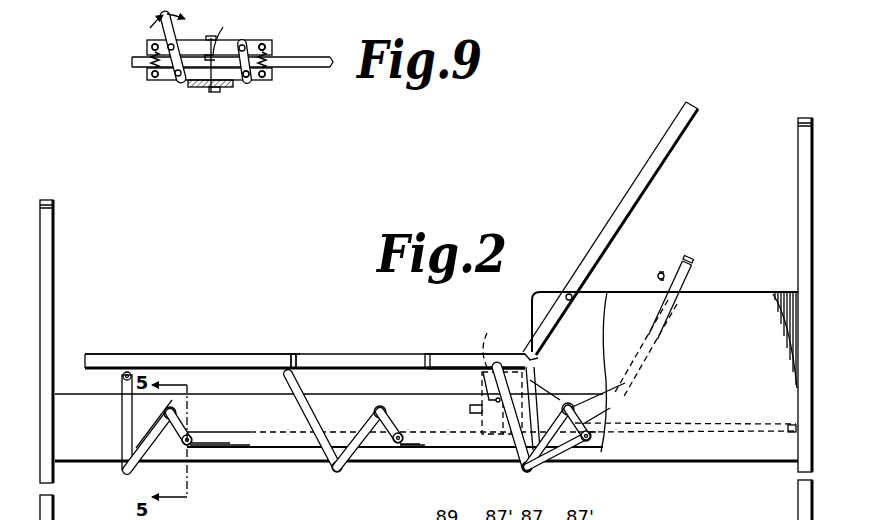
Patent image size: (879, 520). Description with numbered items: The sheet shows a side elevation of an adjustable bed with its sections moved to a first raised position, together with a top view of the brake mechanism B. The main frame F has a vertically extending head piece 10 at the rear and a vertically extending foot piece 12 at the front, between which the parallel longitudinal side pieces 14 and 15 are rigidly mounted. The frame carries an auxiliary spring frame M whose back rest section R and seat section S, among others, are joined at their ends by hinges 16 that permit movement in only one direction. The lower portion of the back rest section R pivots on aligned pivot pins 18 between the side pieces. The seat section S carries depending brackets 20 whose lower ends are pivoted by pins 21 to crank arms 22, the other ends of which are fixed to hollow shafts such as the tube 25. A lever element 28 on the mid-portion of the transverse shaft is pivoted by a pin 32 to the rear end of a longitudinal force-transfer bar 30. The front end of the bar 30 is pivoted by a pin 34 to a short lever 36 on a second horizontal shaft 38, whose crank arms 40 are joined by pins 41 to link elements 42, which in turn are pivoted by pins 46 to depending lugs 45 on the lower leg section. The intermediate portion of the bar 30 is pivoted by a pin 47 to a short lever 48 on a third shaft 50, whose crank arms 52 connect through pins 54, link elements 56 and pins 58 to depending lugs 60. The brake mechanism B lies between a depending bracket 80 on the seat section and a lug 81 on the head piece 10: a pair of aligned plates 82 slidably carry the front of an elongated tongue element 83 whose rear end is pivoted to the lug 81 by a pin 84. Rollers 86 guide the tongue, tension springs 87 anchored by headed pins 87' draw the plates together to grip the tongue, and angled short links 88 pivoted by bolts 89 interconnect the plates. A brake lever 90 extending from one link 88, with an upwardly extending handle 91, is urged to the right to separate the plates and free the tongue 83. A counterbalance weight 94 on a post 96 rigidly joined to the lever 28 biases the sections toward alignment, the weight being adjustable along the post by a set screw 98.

In FIG. 2, the head piece 10 is at (798, 186).
In FIG. 2, the foot piece 12 is at (52, 250).
In FIG. 2, the side piece 14 is at (727, 300).
In FIG. 2, the side piece 15 is at (605, 300).
In FIG. 2, the hinge 16 is at (298, 366).
In FIG. 2, the pivot pin 18 is at (568, 293).
In FIG. 2, the depending bracket 20 is at (510, 458).
In FIG. 2, the pin 21 is at (532, 471).
In FIG. 2, the crank arm 22 is at (562, 455).
In FIG. 2, the hollow shaft 25 is at (627, 384).
In FIG. 2, the lever element 28 is at (612, 408).
In FIG. 2, the force-transfer bar 30 is at (292, 452).
In FIG. 2, the pin 32 is at (592, 438).
In FIG. 2, the pin 34 is at (195, 438).
In FIG. 2, the short lever 36 is at (180, 416).
In FIG. 2, the horizontal shaft 38 is at (187, 408).
In FIG. 2, the crank arm 40 is at (160, 448).
In FIG. 2, the pin 41 is at (124, 474).
In FIG. 2, the link element 42 is at (121, 432).
In FIG. 2, the depending lug 45 is at (122, 376).
In FIG. 2, the pin 46 is at (140, 354).
In FIG. 2, the pin 47 is at (406, 446).
In FIG. 2, the short lever 48 is at (400, 430).
In FIG. 2, the horizontal shaft 50 is at (380, 405).
In FIG. 2, the crank arm 52 is at (366, 428).
In FIG. 2, the pin 54 is at (342, 472).
In FIG. 2, the link element 56 is at (306, 410).
In FIG. 2, the pin 58 is at (286, 370).
In FIG. 2, the depending lug 60 is at (284, 374).
In FIG. 2, the depending bracket 80 is at (484, 386).
In FIG. 2, the lug 81 is at (790, 424).
In FIG. 9, the plate 82 is at (268, 82).
In FIG. 9, the tongue element 83 is at (312, 67).
In FIG. 2, the tongue element 83 is at (692, 422).
In FIG. 2, the pin 84 is at (788, 448).
In FIG. 9, the roller 86 is at (223, 44).
In FIG. 9, the tension spring 87 is at (199, 59).
In FIG. 2, the tension spring 87 is at (552, 377).
In FIG. 9, the headed pin 87' is at (209, 56).
In FIG. 9, the short link 88 is at (244, 82).
In FIG. 9, the bolt 89 is at (258, 44).
In FIG. 9, the brake lever 90 is at (168, 20).
In FIG. 2, the handle 91 is at (488, 338).
In FIG. 2, the counterbalance weight 94 is at (694, 270).
In FIG. 2, the post 96 is at (655, 340).
In FIG. 2, the set screw 98 is at (659, 272).
In FIG. 9, the brake mechanism B is at (198, 88).
In FIG. 2, the brake mechanism B is at (553, 400).
In FIG. 2, the main frame F is at (769, 291).
In FIG. 2, the spring frame M is at (221, 352).
In FIG. 2, the back rest section R is at (641, 194).
In FIG. 2, the seat section S is at (447, 354).